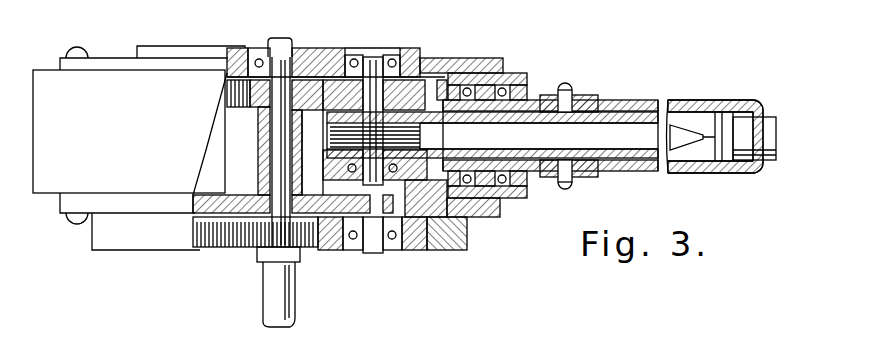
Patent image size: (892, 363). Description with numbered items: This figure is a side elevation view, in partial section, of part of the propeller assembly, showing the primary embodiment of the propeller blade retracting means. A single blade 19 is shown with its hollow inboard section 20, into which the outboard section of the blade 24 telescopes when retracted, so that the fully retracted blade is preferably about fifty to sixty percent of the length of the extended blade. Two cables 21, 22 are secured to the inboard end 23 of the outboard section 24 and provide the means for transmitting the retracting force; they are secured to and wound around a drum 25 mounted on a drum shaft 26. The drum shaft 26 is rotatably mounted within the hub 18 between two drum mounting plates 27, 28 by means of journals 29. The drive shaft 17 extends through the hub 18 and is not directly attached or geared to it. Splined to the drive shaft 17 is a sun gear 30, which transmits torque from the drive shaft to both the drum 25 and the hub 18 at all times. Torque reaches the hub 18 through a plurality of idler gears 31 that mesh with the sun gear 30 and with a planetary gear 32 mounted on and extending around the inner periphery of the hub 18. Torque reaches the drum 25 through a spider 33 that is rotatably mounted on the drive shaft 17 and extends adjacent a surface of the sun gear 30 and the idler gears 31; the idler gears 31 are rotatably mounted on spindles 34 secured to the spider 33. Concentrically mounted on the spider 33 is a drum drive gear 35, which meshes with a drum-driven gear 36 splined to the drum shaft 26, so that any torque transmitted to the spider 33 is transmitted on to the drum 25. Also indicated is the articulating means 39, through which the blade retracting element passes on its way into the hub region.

The drive shaft 17 is at (303, 57).
The hub 18 is at (333, 45).
The blade 19 is at (690, 98).
The hollow inboard section 20 is at (623, 98).
The cable 21 is at (598, 113).
The cable 22 is at (618, 160).
The inboard end of outboard section 23 is at (726, 162).
The outboard section of the blade 24 is at (772, 117).
The drum 25 is at (441, 103).
The drum shaft 26 is at (373, 60).
The drum mounting plate 27 is at (413, 50).
The drum mounting plate 28 is at (478, 217).
The journal 29 is at (355, 60).
The sun gear 30 is at (303, 250).
The idler gear 31 is at (417, 250).
The planetary gear 32 is at (433, 250).
The spider 33 is at (213, 196).
The spindle 34 is at (378, 253).
The drum drive gear 35 is at (256, 107).
The drum-driven gear 36 is at (433, 112).
The articulating means 39 is at (520, 74).